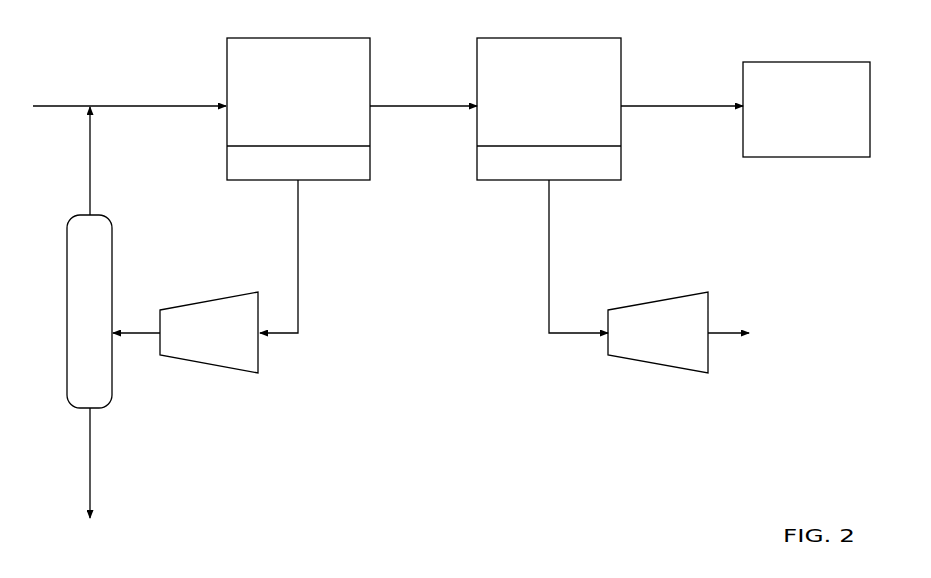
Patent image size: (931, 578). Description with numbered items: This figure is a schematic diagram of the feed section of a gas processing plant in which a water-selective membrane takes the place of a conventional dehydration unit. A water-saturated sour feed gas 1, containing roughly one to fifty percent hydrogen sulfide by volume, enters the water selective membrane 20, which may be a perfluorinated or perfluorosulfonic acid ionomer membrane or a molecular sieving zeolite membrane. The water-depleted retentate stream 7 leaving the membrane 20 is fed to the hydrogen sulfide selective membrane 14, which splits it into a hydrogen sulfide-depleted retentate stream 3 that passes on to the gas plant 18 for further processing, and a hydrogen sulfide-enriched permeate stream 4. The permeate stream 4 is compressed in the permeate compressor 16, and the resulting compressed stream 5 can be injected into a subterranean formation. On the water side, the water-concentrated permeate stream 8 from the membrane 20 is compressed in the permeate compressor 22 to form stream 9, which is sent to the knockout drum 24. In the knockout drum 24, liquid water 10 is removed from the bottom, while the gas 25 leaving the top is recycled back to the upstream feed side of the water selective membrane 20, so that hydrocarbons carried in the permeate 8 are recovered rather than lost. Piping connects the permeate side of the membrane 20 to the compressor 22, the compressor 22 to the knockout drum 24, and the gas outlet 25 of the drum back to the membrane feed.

The feed gas 1 is at (125, 105).
The gas 25 is at (89, 154).
The water selective membrane 20 is at (287, 101).
The retentate stream 7 is at (410, 106).
The hydrogen sulfide selective membrane 14 is at (538, 101).
The retentate stream 3 is at (675, 106).
The gas plant 18 is at (797, 118).
The permeate stream 8 is at (298, 232).
The permeate compressor 22 is at (198, 342).
The compressed stream 9 is at (133, 333).
The knockout drum 24 is at (78, 322).
The liquid water 10 is at (91, 474).
The permeate stream 4 is at (549, 248).
The permeate compressor 16 is at (648, 342).
The compressed stream 5 is at (737, 333).